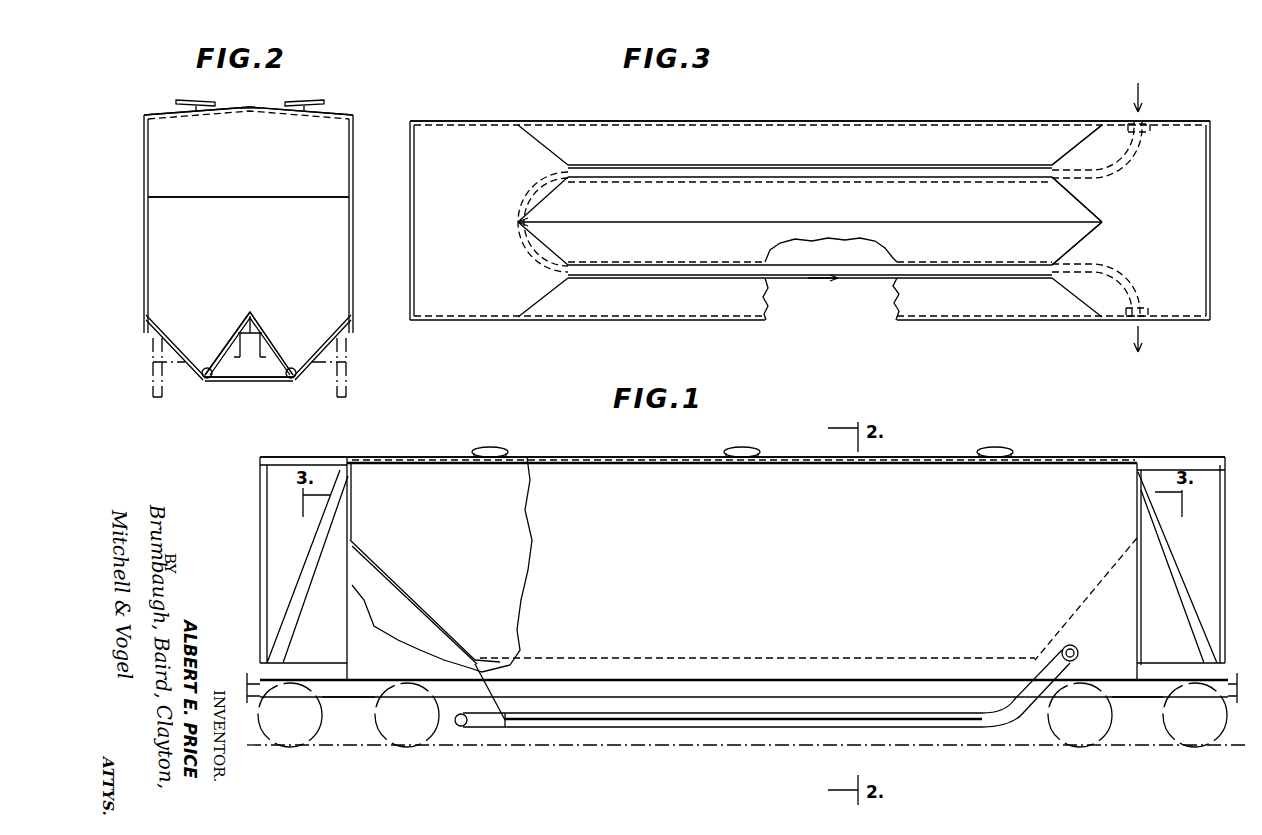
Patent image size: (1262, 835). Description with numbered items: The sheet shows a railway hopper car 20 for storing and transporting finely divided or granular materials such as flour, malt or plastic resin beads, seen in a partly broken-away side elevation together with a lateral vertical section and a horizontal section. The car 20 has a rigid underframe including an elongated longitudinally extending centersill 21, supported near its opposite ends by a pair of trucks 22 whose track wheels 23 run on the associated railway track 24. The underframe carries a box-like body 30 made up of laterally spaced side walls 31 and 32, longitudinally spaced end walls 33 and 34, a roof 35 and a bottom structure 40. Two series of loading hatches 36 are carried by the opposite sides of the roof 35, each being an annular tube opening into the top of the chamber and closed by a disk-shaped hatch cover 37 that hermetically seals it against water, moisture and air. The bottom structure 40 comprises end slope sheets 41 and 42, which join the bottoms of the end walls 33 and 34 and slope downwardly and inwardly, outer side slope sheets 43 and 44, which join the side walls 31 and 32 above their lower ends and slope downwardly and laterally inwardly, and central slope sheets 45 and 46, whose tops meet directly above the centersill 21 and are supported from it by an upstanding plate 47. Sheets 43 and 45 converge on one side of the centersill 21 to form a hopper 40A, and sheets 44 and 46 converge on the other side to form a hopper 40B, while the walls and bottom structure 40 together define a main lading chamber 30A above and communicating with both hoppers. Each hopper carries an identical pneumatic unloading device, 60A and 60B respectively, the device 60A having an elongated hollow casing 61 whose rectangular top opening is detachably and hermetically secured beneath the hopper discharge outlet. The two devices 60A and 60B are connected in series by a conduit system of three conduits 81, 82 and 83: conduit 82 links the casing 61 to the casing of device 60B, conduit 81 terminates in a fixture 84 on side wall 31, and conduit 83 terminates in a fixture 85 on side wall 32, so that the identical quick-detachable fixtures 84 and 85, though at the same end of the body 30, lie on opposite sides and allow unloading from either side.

In FIG. 2, the railway hopper car 20 is at (134, 169).
In FIG. 1, the railway hopper car 20 is at (1059, 449).
In FIG. 2, the centersill 21 is at (245, 355).
In FIG. 1, the centersill 21 is at (1120, 686).
In FIG. 1, the trucks 22 is at (1143, 729).
In FIG. 2, the track wheels 23 is at (347, 391).
In FIG. 1, the track wheels 23 is at (1204, 740).
In FIG. 1, the railway track 24 is at (480, 747).
In FIG. 2, the body 30 is at (362, 218).
In FIG. 3, the body 30 is at (881, 113).
In FIG. 1, the body 30 is at (882, 483).
In FIG. 2, the main lading chamber 30A is at (262, 181).
In FIG. 1, the main lading chamber 30A is at (487, 516).
In FIG. 2, the side wall 31 is at (143, 242).
In FIG. 3, the side wall 31 is at (687, 320).
In FIG. 1, the side wall 31 is at (973, 573).
In FIG. 2, the side wall 32 is at (348, 238).
In FIG. 3, the side wall 32 is at (695, 121).
In FIG. 2, the end wall 33 is at (351, 158).
In FIG. 3, the end wall 33 is at (414, 242).
In FIG. 1, the end wall 33 is at (352, 514).
In FIG. 3, the end wall 34 is at (1208, 213).
In FIG. 1, the end wall 34 is at (1141, 526).
In FIG. 2, the roof 35 is at (259, 97).
In FIG. 1, the roof 35 is at (663, 460).
In FIG. 2, the loading hatches 36 is at (302, 112).
In FIG. 1, the loading hatches 36 is at (985, 463).
In FIG. 2, the hatch cover 37 is at (312, 100).
In FIG. 1, the hatch cover 37 is at (1003, 449).
In FIG. 2, the bottom structure 40 is at (265, 308).
In FIG. 3, the bottom structure 40 is at (648, 212).
In FIG. 1, the bottom structure 40 is at (482, 646).
In FIG. 2, the hopper 40A is at (195, 353).
In FIG. 3, the hopper 40A is at (693, 276).
In FIG. 2, the hopper 40B is at (302, 352).
In FIG. 3, the hopper 40B is at (885, 168).
In FIG. 2, the end slope sheet 41 is at (219, 254).
In FIG. 3, the end slope sheet 41 is at (483, 279).
In FIG. 1, the end slope sheet 41 is at (393, 587).
In FIG. 3, the end slope sheet 42 is at (1171, 255).
In FIG. 1, the end slope sheet 42 is at (1094, 580).
In FIG. 2, the outer side slope sheet 43 is at (163, 332).
In FIG. 3, the outer side slope sheet 43 is at (983, 320).
In FIG. 2, the outer side slope sheet 44 is at (336, 330).
In FIG. 3, the outer side slope sheet 44 is at (1014, 137).
In FIG. 2, the central slope sheet 45 is at (229, 345).
In FIG. 3, the central slope sheet 45 is at (1067, 240).
In FIG. 1, the central slope sheet 45 is at (490, 661).
In FIG. 2, the central slope sheet 46 is at (274, 349).
In FIG. 3, the central slope sheet 46 is at (1065, 208).
In FIG. 2, the plate 47 is at (258, 330).
In FIG. 2, the pneumatic unloading device 60A is at (198, 382).
In FIG. 3, the pneumatic unloading device 60A is at (935, 262).
In FIG. 1, the pneumatic unloading device 60A is at (645, 729).
In FIG. 2, the pneumatic unloading device 60B is at (295, 382).
In FIG. 3, the pneumatic unloading device 60B is at (972, 182).
In FIG. 1, the casing 61 is at (583, 722).
In FIG. 3, the conduit 81 is at (1133, 282).
In FIG. 1, the conduit 81 is at (1008, 715).
In FIG. 2, the conduit 82 is at (261, 382).
In FIG. 3, the conduit 82 is at (545, 258).
In FIG. 1, the conduit 82 is at (495, 714).
In FIG. 3, the conduit 83 is at (1132, 160).
In FIG. 3, the fixture 84 is at (1148, 306).
In FIG. 1, the fixture 84 is at (1078, 648).
In FIG. 3, the fixture 85 is at (1150, 126).